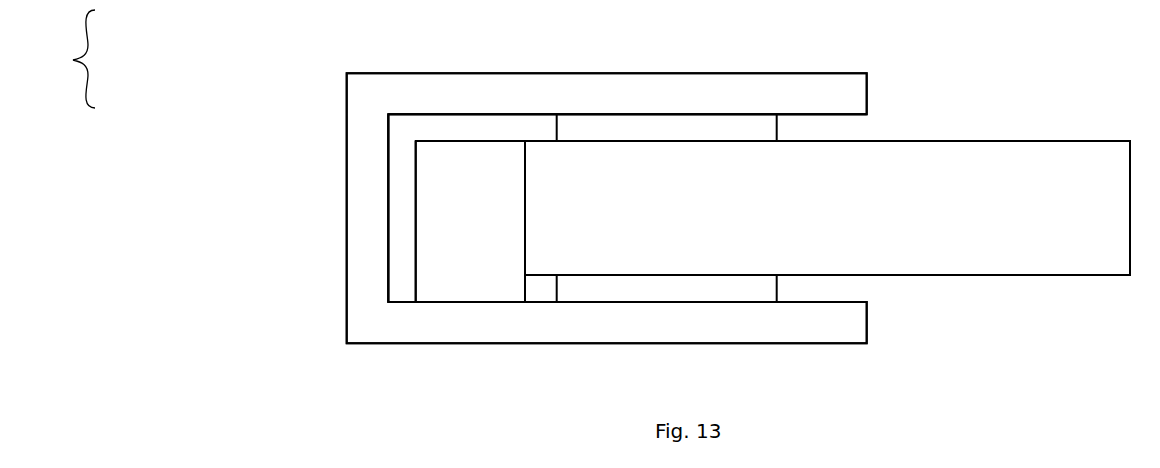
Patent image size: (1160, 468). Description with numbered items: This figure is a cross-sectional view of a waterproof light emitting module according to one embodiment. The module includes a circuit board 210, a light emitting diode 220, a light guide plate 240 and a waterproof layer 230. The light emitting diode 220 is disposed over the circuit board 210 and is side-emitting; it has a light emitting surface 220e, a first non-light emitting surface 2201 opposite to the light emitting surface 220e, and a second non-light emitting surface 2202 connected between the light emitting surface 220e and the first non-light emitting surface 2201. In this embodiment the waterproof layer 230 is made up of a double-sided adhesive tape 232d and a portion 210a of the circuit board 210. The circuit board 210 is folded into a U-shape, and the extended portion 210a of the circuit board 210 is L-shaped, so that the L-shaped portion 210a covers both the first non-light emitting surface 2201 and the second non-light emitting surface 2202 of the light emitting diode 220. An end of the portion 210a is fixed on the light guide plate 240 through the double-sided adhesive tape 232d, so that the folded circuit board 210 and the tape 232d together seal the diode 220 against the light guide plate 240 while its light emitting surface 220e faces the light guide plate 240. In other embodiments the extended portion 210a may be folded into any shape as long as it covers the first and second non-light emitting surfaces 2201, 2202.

The waterproof layer 230 is at (85, 59).
The portion of circuit board 210a is at (748, 73).
The double-sided adhesive tape 232d is at (667, 128).
The light emitting diode 220 is at (473, 290).
The first non-light emitting surface 2201 is at (404, 180).
The second non-light emitting surface 2202 is at (462, 130).
The light emitting surface 220e is at (542, 182).
The light guide plate 240 is at (1035, 260).
The circuit board 210 is at (697, 323).